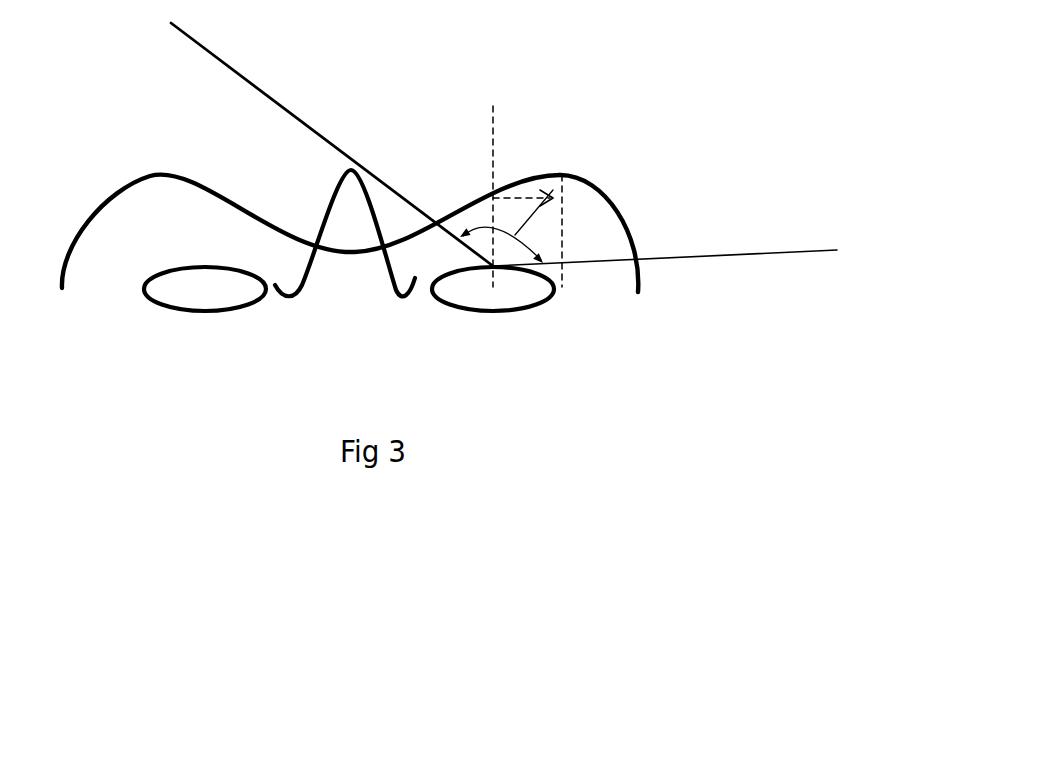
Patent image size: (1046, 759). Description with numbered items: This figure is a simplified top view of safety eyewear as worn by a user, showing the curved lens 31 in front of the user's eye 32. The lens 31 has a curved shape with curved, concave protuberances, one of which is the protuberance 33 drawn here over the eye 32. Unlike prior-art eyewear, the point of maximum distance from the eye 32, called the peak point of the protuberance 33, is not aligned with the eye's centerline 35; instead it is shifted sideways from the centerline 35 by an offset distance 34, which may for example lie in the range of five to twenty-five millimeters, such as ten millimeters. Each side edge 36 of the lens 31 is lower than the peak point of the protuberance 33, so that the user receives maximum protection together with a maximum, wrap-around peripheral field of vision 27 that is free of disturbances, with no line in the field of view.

The peripheral field of vision 27 is at (561, 175).
The lens 31 is at (620, 215).
The eye 32 is at (522, 300).
The protuberance 33 is at (562, 175).
The offset distance 34 is at (521, 198).
The eye's centerline 35 is at (491, 111).
The side edge 36 is at (642, 259).